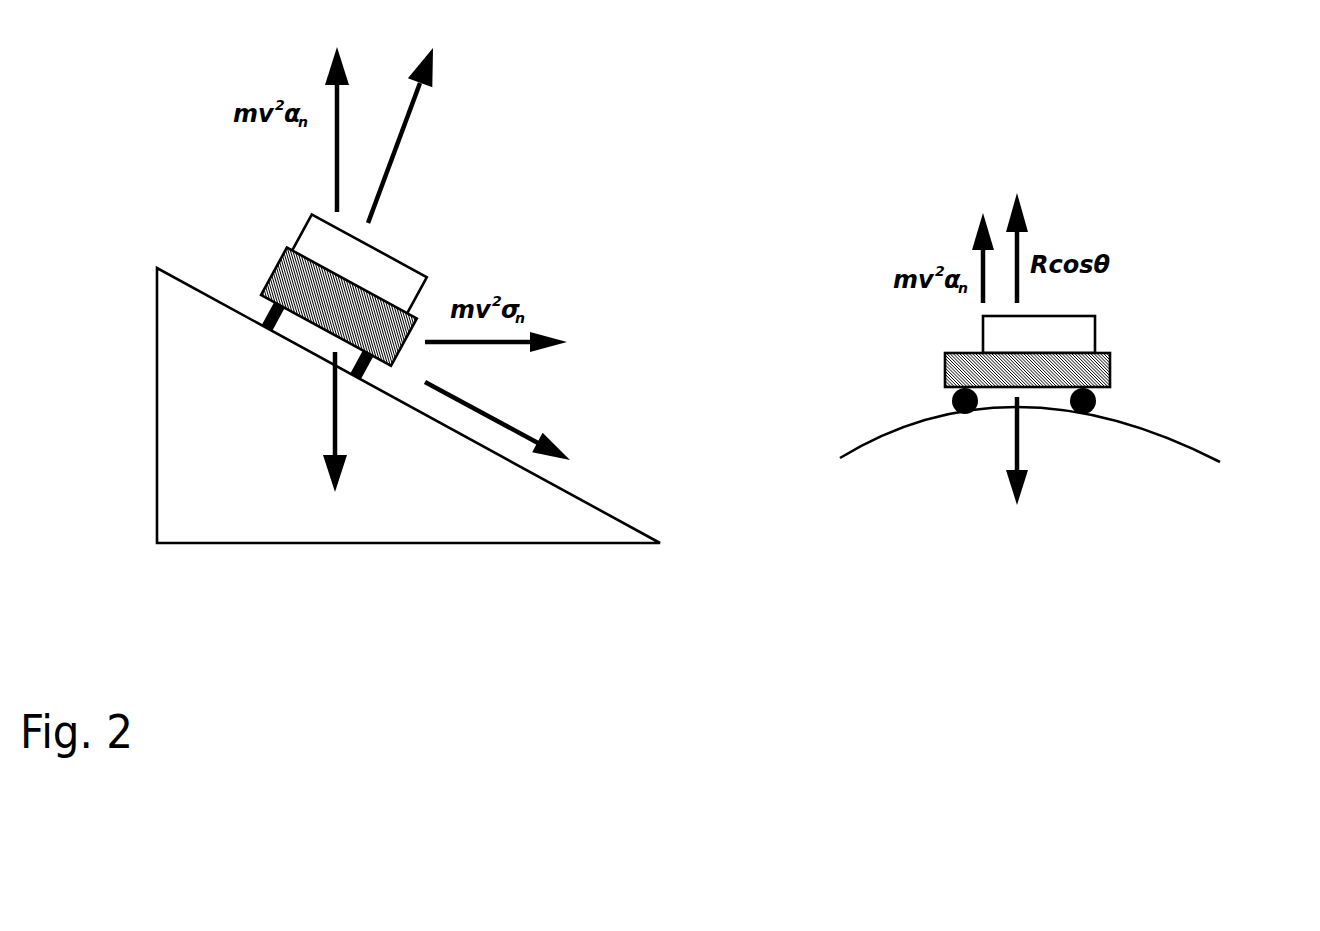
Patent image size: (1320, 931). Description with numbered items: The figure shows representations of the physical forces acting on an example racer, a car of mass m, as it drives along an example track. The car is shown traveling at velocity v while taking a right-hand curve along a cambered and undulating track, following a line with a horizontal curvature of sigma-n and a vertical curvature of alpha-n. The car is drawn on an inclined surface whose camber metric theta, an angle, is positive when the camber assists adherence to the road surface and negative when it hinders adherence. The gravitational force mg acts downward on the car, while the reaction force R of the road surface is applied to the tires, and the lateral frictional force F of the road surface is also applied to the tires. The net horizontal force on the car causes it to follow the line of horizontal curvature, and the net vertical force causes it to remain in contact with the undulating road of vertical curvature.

The reaction force R is at (420, 135).
The lateral frictional force F is at (509, 425).
The gravitational force mg is at (699, 435).
The camber metric theta is at (580, 527).